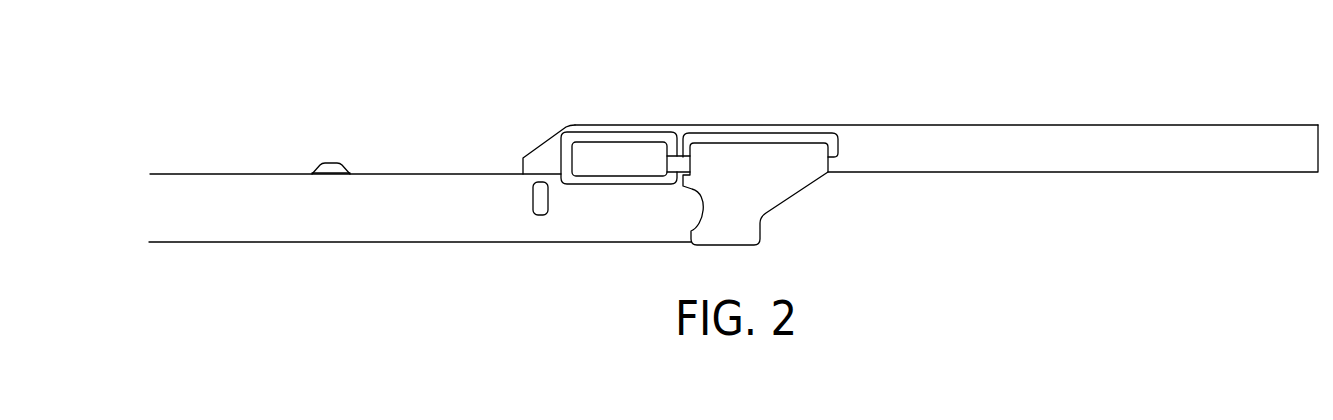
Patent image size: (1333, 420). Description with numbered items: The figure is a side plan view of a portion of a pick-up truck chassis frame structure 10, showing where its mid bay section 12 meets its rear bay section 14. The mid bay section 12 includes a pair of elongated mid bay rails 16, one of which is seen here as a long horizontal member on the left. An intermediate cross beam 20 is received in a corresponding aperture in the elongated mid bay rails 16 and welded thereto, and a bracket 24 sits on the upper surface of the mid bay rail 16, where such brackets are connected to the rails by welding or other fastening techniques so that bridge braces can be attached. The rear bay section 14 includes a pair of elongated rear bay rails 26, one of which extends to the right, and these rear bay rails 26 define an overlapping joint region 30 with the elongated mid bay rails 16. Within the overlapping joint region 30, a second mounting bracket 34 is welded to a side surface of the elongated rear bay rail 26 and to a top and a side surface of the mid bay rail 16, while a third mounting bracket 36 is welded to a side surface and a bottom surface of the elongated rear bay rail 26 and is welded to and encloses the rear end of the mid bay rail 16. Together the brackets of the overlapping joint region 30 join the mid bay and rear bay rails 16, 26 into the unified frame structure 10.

The pick-up truck chassis frame structure 10 is at (859, 69).
The mid bay section 12 is at (405, 104).
The rear bay section 14 is at (997, 84).
The elongated mid bay rails 16 is at (313, 230).
The intermediate cross beam 20 is at (542, 207).
The brackets 24 is at (332, 163).
The elongated rear bay rails 26 is at (1052, 155).
The overlapping joint region 30 is at (561, 252).
The second mounting brackets 34 is at (628, 158).
The third mounting brackets 36 is at (777, 185).